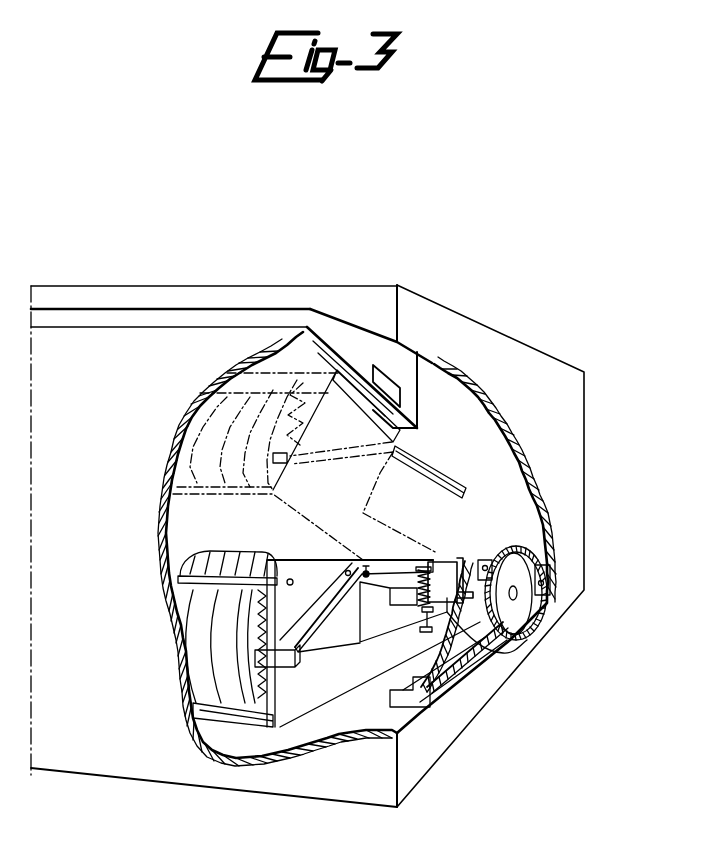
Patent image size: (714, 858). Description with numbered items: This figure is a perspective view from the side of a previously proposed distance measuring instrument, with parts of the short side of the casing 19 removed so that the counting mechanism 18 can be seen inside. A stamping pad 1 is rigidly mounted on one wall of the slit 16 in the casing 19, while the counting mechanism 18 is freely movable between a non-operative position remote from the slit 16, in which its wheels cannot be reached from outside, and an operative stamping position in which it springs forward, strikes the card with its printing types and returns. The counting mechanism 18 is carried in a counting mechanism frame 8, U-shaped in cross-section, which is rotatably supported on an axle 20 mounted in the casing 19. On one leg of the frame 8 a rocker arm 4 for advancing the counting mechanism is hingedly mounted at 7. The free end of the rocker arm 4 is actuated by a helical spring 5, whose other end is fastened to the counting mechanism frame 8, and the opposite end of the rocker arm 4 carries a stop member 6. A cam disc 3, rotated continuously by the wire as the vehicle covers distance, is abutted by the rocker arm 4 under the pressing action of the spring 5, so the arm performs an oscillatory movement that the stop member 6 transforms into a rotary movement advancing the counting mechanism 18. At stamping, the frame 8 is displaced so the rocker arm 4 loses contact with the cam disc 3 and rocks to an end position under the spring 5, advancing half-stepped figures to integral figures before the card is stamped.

The stamping pad 1 is at (388, 383).
The cam disc 3 is at (453, 557).
The rocker arm 4 is at (327, 620).
The helical spring 5 is at (498, 647).
The stop member 6 is at (269, 727).
The hinge mounting 7 is at (366, 571).
The counting mechanism frame 8 is at (310, 687).
The slit 16 is at (220, 318).
The counting mechanism 18 is at (220, 693).
The casing 19 is at (173, 300).
The axle 20 is at (505, 537).